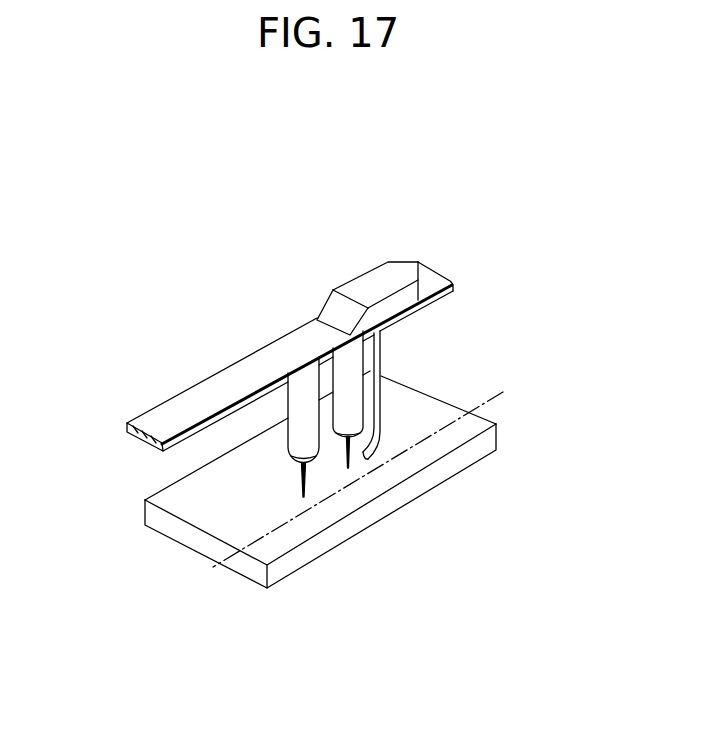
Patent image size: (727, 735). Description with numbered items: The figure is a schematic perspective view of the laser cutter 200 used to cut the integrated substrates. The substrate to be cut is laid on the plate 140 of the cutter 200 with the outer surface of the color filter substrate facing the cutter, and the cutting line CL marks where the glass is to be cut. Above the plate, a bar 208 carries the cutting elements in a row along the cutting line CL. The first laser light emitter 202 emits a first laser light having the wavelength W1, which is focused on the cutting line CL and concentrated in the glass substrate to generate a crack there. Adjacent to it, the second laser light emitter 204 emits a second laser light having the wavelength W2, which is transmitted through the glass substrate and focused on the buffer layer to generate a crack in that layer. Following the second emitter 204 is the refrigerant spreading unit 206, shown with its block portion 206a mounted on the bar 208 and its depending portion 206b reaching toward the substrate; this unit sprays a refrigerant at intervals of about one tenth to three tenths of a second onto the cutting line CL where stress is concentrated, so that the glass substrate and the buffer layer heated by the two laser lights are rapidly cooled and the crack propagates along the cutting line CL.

The cutter 200 is at (433, 191).
The support bar 208 is at (250, 346).
The refrigerant spreading unit 206 is at (523, 315).
The guide block 206a is at (400, 303).
The guide strip 206b is at (383, 354).
The first laser light emitter 202 is at (293, 441).
The second laser light emitter 204 is at (350, 413).
The wavelength of first laser light W1 is at (285, 487).
The wavelength of second laser light W2 is at (332, 462).
The base plate 140 is at (182, 533).
The cutting line CL is at (375, 472).